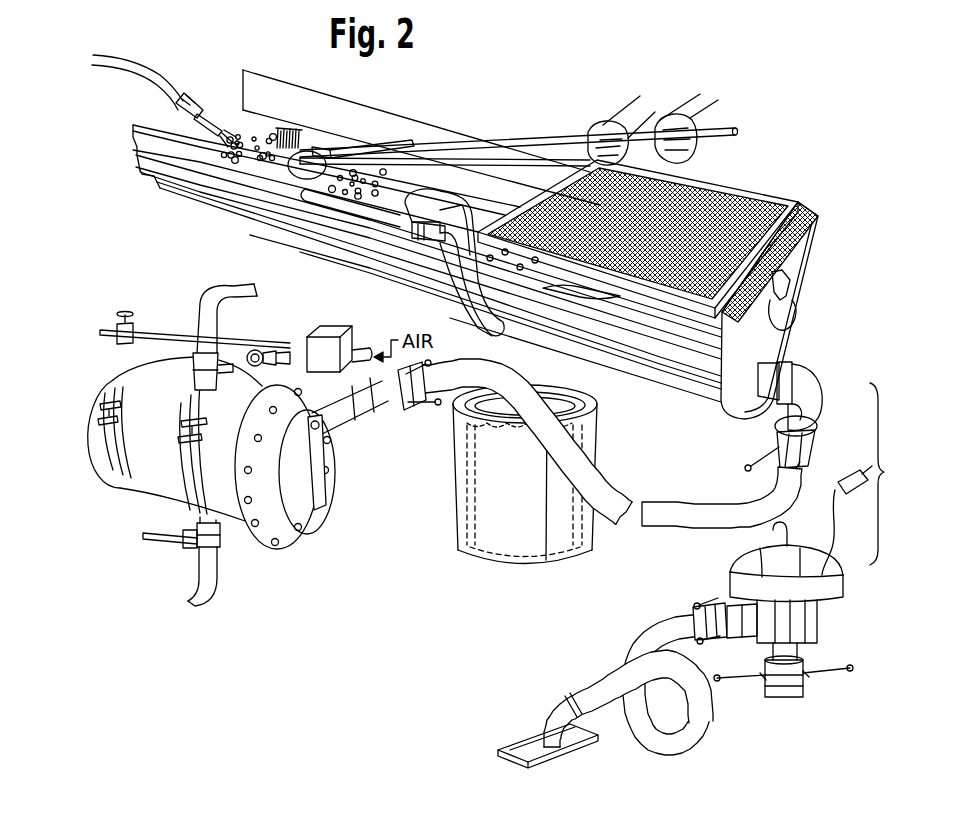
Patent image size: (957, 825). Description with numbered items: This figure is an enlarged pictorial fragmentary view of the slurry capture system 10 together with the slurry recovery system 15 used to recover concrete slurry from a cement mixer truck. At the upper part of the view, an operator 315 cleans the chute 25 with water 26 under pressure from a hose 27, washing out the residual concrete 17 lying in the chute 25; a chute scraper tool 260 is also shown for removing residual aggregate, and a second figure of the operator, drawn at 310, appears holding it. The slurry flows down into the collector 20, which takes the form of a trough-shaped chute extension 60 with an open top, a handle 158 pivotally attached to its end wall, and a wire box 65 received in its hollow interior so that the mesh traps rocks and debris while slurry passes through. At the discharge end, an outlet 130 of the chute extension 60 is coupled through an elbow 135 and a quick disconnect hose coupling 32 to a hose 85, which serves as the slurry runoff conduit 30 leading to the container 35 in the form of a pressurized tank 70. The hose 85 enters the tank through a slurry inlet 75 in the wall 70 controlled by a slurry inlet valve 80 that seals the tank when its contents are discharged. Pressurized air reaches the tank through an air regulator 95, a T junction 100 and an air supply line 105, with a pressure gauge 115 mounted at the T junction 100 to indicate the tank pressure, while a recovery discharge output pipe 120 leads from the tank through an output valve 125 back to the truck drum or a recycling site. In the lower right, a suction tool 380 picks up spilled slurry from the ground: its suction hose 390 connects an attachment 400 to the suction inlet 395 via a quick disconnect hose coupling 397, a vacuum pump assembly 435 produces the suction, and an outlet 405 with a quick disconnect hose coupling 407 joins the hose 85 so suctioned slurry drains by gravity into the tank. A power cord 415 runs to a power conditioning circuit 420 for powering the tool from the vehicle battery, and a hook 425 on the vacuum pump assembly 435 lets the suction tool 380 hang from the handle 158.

The slurry capture system 10 is at (800, 355).
The slurry recovery system 15 is at (142, 499).
The residual concrete 17 is at (262, 124).
The collector 20 is at (674, 383).
The chute 25 is at (236, 214).
The water 26 is at (213, 103).
The hose 27 is at (137, 60).
The slurry runoff conduit 30 is at (600, 479).
The quick disconnect hose coupling 32 is at (790, 452).
The container 35 is at (88, 440).
The chute extension 60 is at (800, 265).
The wire box 65 is at (745, 190).
The pressurized tank 70 is at (305, 513).
The slurry inlet 75 is at (280, 527).
The slurry inlet valve 80 is at (330, 428).
The hose 85 is at (715, 503).
The air regulator 95 is at (352, 348).
The T junction 100 is at (275, 328).
The air supply line 105 is at (338, 336).
The pressure gauge 115 is at (253, 350).
The recovery discharge output pipe 120 is at (185, 582).
The output valve 125 is at (223, 538).
The outlet 130 is at (757, 400).
The elbow 135 is at (817, 418).
The handle 158 is at (790, 327).
The chute scraper tool 260 is at (469, 134).
The left hand 310 is at (587, 118).
The operator 315 is at (674, 116).
The suction tool 380 is at (797, 710).
The suction hose 390 is at (606, 682).
The suction inlet 395 is at (732, 603).
The quick disconnect hose coupling 397 is at (728, 603).
The attachment 400 is at (540, 733).
The outlet 405 is at (775, 651).
The quick disconnect hose coupling 407 is at (788, 698).
The power cord 415 is at (815, 590).
The power conditioning circuit 420 is at (834, 492).
The hook 425 is at (778, 546).
The vacuum pump assembly 435 is at (817, 642).